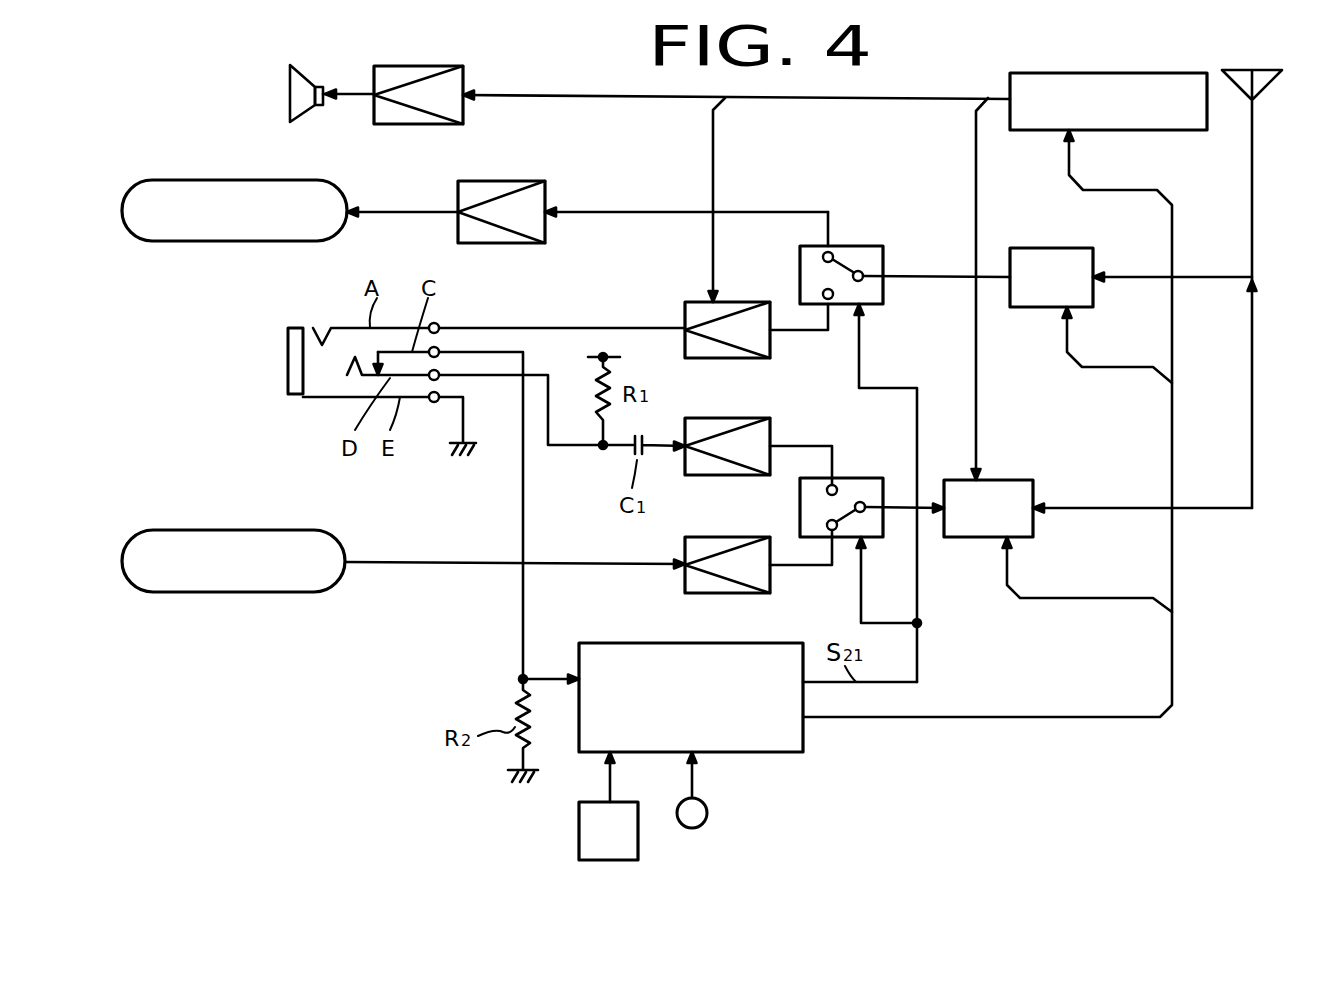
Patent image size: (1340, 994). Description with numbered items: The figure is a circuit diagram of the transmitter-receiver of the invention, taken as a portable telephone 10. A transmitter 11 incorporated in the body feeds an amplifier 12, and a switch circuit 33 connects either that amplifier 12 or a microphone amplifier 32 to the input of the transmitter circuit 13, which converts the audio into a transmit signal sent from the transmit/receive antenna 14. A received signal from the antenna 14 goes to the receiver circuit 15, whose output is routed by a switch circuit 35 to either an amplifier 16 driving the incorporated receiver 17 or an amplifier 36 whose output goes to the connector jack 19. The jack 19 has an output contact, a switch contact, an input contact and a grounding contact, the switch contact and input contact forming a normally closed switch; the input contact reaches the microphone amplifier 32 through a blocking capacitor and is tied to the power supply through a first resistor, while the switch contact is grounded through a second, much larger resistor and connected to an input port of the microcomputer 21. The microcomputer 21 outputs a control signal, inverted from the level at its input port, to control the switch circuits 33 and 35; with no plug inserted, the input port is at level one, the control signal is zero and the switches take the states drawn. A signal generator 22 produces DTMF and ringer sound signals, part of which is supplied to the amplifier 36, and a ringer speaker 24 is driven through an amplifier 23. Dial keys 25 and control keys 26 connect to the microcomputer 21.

The portable telephone 10 is at (1041, 787).
The transmitter 11 is at (225, 592).
The amplifier 12 is at (725, 593).
The transmitter circuit 13 is at (970, 537).
The transmit/receive antenna 14 is at (1252, 160).
The receiver circuit 15 is at (1035, 307).
The amplifier 16 is at (497, 243).
The receiver 17 is at (267, 241).
The connector jack 19 is at (318, 397).
The microcomputer 21 is at (735, 752).
The signal generator 22 is at (1037, 130).
The amplifier 23 is at (405, 124).
The speaker 24 is at (311, 110).
The dial keys 25 is at (606, 860).
The control keys 26 is at (700, 828).
The microphone amplifier 32 is at (718, 475).
The switch circuit 33 is at (883, 537).
The switch circuit 35 is at (883, 304).
The amplifier 36 is at (718, 358).